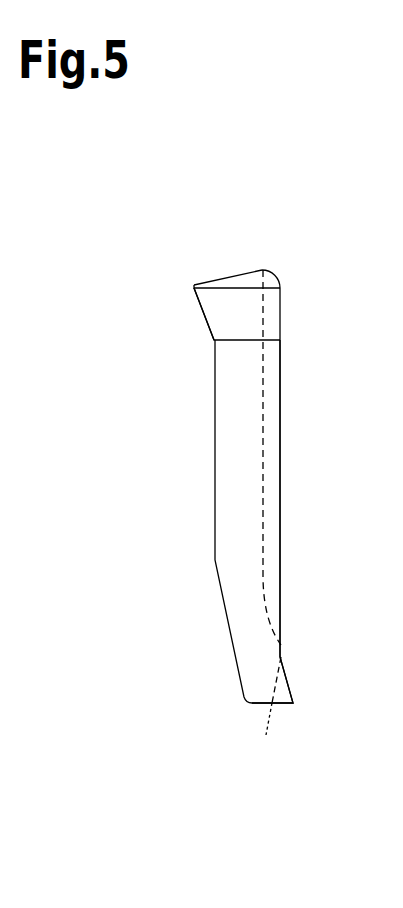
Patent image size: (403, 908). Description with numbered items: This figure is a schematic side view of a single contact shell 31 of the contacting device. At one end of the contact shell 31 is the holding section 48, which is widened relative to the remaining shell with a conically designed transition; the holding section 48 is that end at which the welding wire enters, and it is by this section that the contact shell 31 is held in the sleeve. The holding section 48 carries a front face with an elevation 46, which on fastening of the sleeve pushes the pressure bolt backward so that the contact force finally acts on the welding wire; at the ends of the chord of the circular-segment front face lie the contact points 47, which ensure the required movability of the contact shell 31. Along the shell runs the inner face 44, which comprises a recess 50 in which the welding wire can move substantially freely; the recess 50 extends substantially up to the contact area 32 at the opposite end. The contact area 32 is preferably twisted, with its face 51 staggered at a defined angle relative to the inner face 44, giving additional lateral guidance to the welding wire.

The contact shell 31 is at (165, 237).
The elevation 46 is at (262, 270).
The contact point 47 is at (295, 285).
The holding section 48 is at (165, 333).
The inner face 44 is at (299, 458).
The recess 50 is at (272, 430).
The contact area 32 is at (305, 658).
The face of the contact area 51 is at (282, 688).